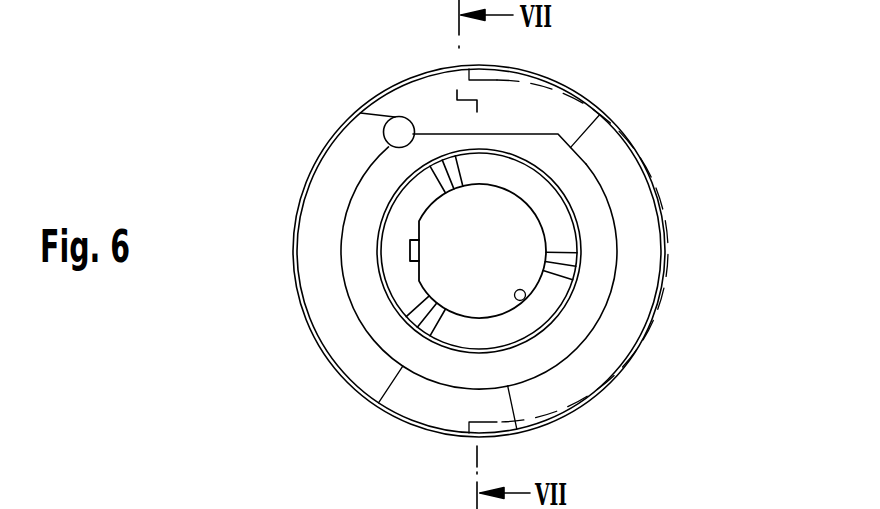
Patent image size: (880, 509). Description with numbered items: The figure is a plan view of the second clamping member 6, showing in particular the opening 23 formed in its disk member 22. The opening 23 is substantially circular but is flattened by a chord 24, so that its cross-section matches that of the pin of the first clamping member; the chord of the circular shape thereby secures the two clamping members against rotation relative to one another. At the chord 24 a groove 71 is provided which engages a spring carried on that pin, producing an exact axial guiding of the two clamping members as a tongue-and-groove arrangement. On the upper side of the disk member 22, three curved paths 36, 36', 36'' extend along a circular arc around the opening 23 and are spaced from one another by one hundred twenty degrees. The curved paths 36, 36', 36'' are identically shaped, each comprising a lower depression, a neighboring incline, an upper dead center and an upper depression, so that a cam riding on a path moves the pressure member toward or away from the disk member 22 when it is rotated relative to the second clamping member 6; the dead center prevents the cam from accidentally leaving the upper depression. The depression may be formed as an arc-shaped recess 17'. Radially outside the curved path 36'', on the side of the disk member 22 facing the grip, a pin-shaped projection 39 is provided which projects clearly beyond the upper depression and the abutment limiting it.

The second clamping member 6 is at (657, 177).
The arc-shaped recess 17' is at (607, 251).
The disk member 22 is at (593, 310).
The opening 23 is at (521, 301).
The chord 24 is at (408, 275).
The curved path 36 is at (526, 223).
The curved path 36' is at (418, 388).
The curved path 36'' is at (406, 236).
The projection 39 is at (398, 126).
The groove 71 is at (410, 248).